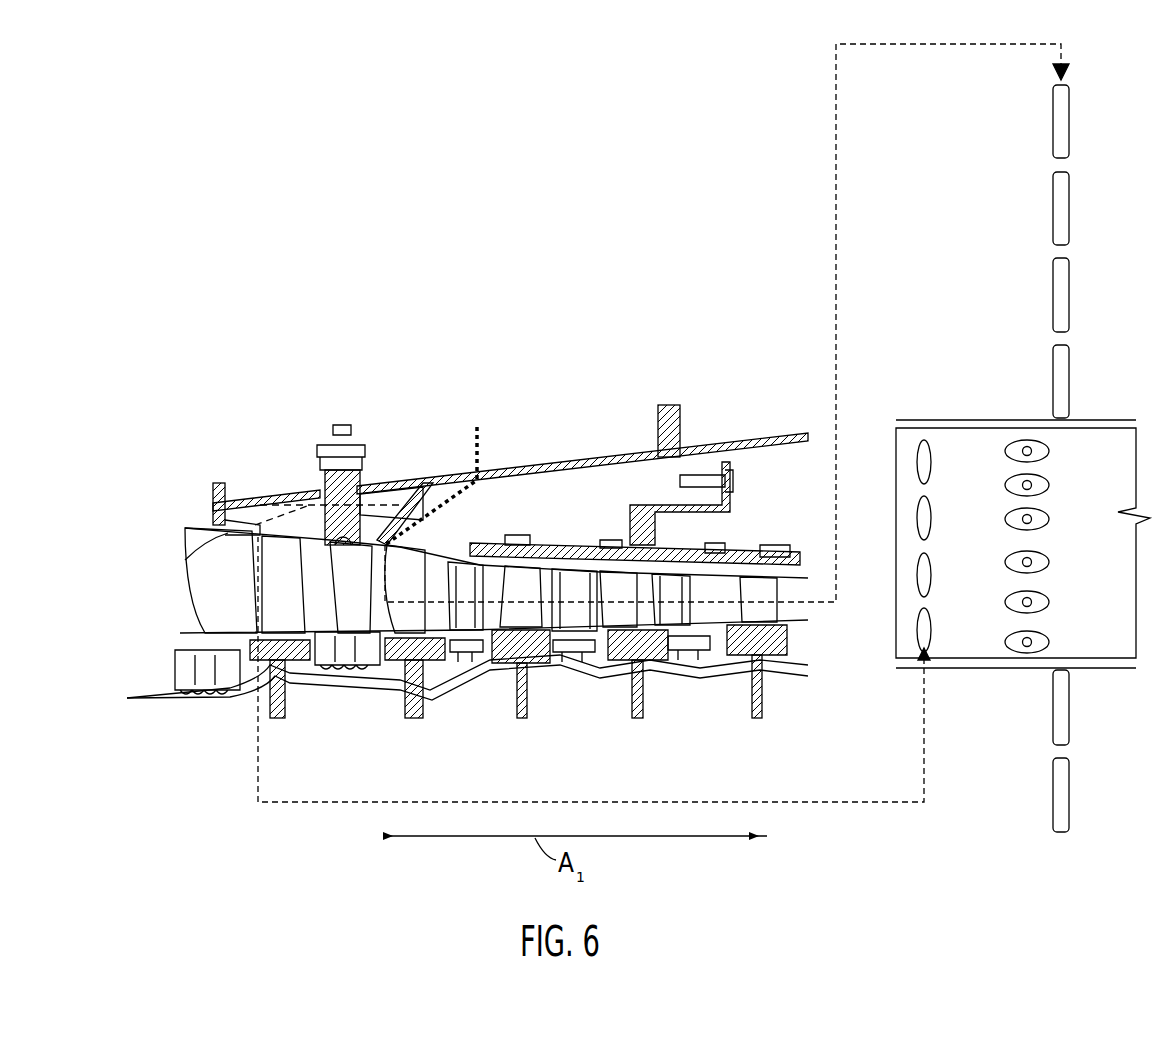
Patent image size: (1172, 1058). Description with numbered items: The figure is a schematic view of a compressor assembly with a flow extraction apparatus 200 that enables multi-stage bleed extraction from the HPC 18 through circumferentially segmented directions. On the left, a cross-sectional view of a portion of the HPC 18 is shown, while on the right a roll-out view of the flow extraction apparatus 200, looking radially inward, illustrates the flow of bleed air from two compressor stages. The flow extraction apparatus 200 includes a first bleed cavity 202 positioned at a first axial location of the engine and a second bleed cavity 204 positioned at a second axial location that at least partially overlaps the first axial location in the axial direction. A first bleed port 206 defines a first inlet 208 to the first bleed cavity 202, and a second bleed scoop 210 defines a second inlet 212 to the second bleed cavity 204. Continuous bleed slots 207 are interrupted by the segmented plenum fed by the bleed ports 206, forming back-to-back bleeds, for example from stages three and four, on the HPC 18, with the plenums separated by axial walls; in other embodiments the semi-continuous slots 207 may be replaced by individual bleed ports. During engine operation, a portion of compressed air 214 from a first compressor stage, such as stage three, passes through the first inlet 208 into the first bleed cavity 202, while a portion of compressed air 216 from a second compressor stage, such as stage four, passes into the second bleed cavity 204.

The HPC 18 is at (227, 347).
The flow extraction apparatus 200 is at (426, 381).
The first bleed cavity 202 is at (465, 455).
The second bleed cavity 204 is at (505, 462).
The first bleed port 206 is at (255, 540).
The continuous bleed slots 207 is at (1078, 208).
The first inlet 208 is at (267, 558).
The second bleed scoop 210 is at (372, 553).
The second inlet 212 is at (403, 557).
The compressed air from a first compressor stage 214 is at (397, 500).
The compressed air from a second compressor stage 216 is at (452, 487).